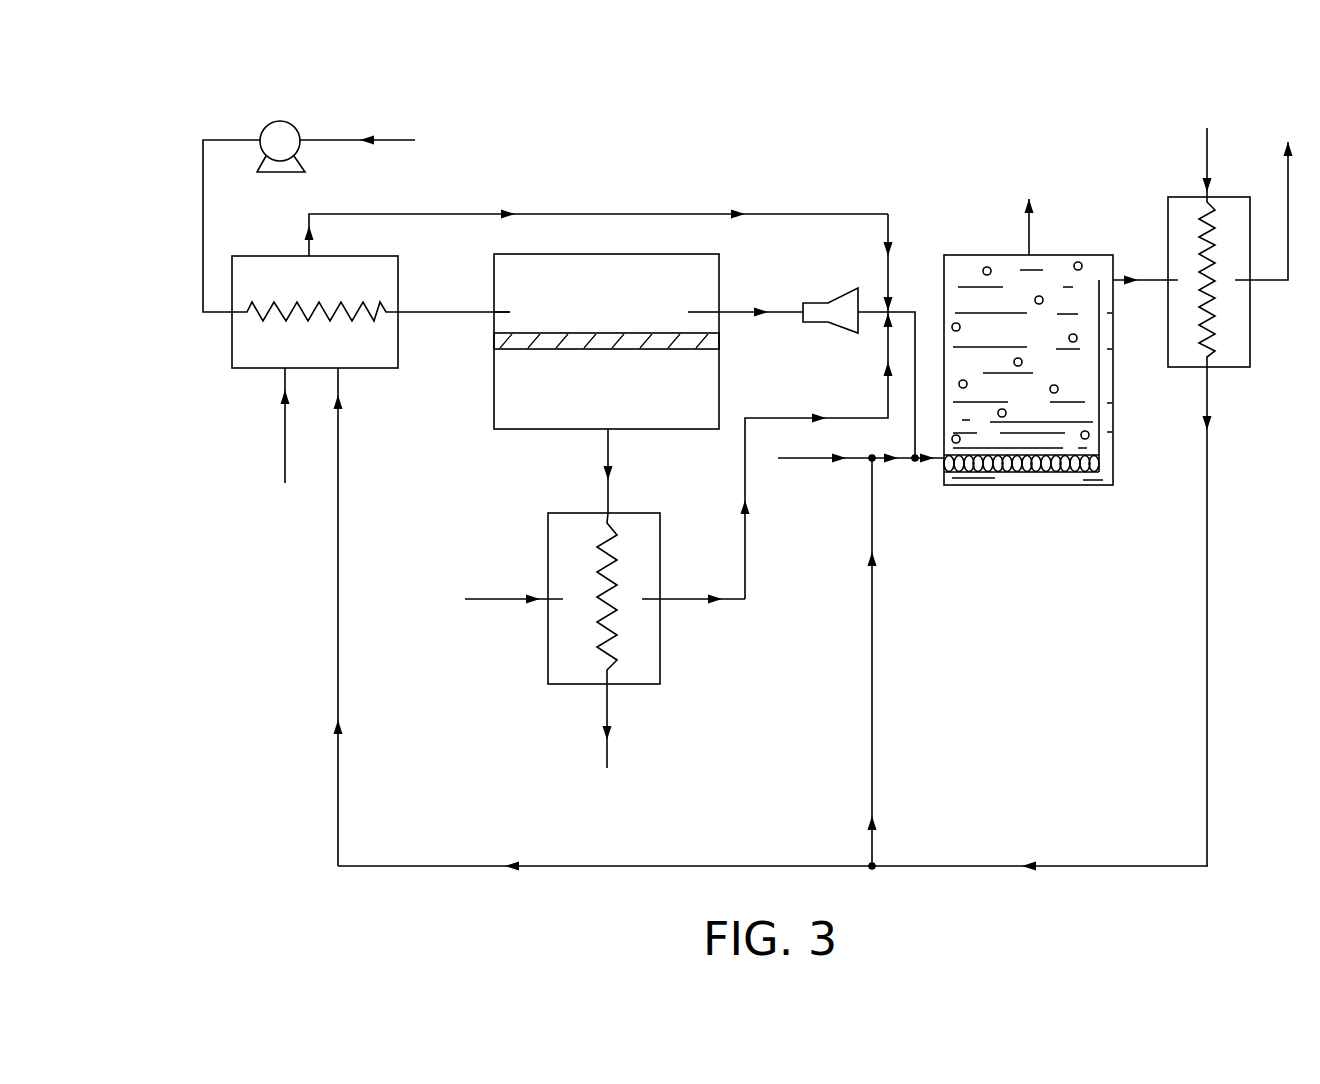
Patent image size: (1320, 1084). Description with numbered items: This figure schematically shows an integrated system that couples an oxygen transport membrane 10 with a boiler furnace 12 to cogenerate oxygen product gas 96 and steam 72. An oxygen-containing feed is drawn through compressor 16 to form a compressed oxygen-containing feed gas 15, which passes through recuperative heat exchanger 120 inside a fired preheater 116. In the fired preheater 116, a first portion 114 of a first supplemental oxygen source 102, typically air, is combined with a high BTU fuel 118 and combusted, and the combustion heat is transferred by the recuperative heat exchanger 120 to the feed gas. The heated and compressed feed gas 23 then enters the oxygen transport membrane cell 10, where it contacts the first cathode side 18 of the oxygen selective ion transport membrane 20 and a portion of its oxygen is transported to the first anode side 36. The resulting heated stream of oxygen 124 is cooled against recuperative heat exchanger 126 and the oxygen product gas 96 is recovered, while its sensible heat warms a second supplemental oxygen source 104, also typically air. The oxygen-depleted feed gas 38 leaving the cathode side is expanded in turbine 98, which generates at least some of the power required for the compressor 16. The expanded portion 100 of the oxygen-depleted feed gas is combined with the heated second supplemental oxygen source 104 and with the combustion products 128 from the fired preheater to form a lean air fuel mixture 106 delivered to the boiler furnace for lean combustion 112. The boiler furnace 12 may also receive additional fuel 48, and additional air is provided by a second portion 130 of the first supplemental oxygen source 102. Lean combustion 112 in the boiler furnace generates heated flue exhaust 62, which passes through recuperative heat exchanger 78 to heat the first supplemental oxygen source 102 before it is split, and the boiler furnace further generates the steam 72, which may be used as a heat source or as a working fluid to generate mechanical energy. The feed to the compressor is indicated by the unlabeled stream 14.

The oxygen transport membrane cell 10 is at (476, 389).
The boiler furnace 12 is at (930, 268).
The feed stream 14 is at (393, 140).
The compressed oxygen-containing feed gas 15 is at (203, 233).
The compressor 16 is at (296, 128).
The first cathode side 18 is at (507, 332).
The first oxygen selective ion transport membrane 20 is at (710, 340).
The heated and compressed feed gas 23 is at (438, 312).
The first anode side 36 is at (680, 350).
The oxygen-depleted feed gas 38 is at (772, 308).
The additional fuel 48 is at (802, 462).
The flue exhaust 62 is at (1150, 283).
The steam 72 is at (1033, 222).
The recuperative heat exchanger 78 is at (1217, 313).
The oxygen product gas 96 is at (608, 708).
The turbine 98 is at (820, 312).
The expanded portion of oxygen depleted feed gas 100 is at (875, 312).
The first supplemental oxygen source 102 is at (1208, 143).
The second supplemental oxygen source 104 is at (488, 602).
The lean air fuel mixture 106 is at (913, 430).
The lean combustion 112 is at (1018, 473).
The first portion of supplemental oxygen source 114 is at (757, 867).
The fired preheater 116 is at (242, 337).
The high BTU fuel 118 is at (285, 448).
The recuperative heat exchanger 120 is at (342, 300).
The heated stream of oxygen 124 is at (610, 450).
The recuperative heat exchanger 126 is at (610, 643).
The combustion products 128 is at (592, 213).
The second portion of first supplemental oxygen source 130 is at (873, 718).